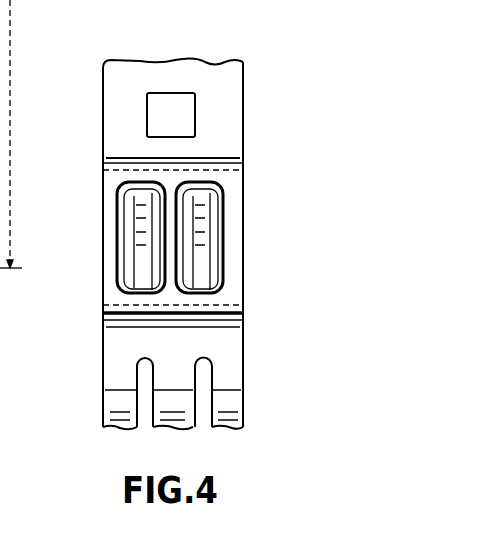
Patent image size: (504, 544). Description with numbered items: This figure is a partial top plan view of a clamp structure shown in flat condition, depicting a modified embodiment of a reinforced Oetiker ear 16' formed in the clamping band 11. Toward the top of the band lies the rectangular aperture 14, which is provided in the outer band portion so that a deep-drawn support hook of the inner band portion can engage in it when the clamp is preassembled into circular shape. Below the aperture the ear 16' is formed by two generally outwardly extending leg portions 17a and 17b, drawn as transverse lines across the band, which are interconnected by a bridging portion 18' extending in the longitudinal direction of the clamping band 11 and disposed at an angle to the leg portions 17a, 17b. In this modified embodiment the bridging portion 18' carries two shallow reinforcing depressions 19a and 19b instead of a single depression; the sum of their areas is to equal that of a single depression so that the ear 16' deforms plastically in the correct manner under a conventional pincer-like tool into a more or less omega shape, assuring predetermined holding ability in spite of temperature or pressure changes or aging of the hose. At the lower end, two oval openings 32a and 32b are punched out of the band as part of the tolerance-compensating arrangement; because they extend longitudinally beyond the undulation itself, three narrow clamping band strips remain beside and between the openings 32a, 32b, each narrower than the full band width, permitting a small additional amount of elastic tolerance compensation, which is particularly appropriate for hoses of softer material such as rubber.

The clamping band 11 is at (228, 338).
The rectangular aperture 14 is at (195, 120).
The Oetiker ear 16' is at (271, 244).
The leg portion 17a is at (133, 318).
The leg portion 17b is at (203, 158).
The bridging portion 18' is at (103, 237).
The reinforcing depression 19a is at (152, 238).
The reinforcing depression 19b is at (203, 238).
The oval opening 32a is at (135, 400).
The oval opening 32b is at (203, 397).